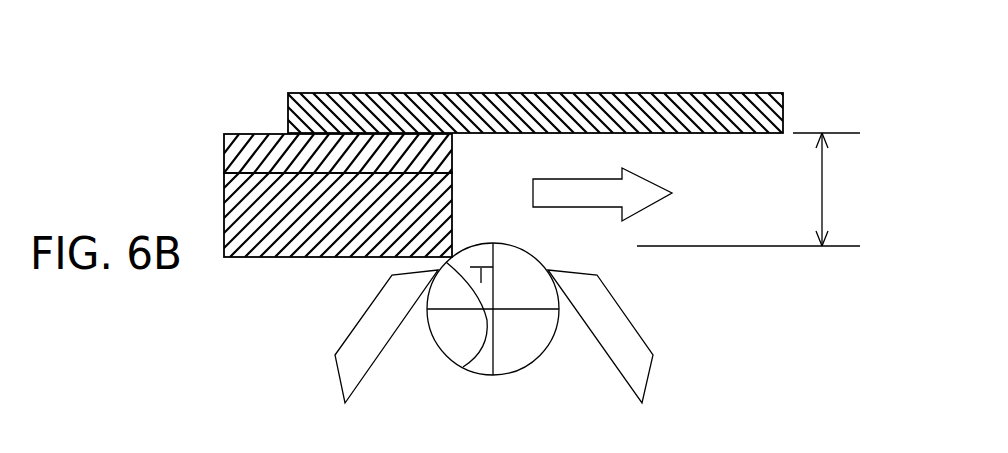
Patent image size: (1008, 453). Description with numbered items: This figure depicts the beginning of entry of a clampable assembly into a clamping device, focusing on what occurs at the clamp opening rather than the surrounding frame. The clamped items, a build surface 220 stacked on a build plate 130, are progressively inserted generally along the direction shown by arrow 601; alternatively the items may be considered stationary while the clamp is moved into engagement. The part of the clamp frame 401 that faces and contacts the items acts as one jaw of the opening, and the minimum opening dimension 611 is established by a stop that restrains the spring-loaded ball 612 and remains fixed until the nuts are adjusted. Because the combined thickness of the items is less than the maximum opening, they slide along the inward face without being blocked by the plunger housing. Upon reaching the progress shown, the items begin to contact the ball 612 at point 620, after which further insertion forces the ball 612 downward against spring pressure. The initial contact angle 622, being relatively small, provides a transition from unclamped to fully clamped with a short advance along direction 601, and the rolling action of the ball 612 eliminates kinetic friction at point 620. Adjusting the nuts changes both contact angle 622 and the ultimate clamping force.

The clamp frame 401 is at (623, 93).
The build surface 220 is at (247, 133).
The build plate 130 is at (300, 258).
The arrow 601 is at (643, 181).
The minimum opening dimension 611 is at (825, 190).
The roller 612 is at (523, 375).
The point 620 is at (468, 272).
The initial contact angle 622 is at (463, 367).